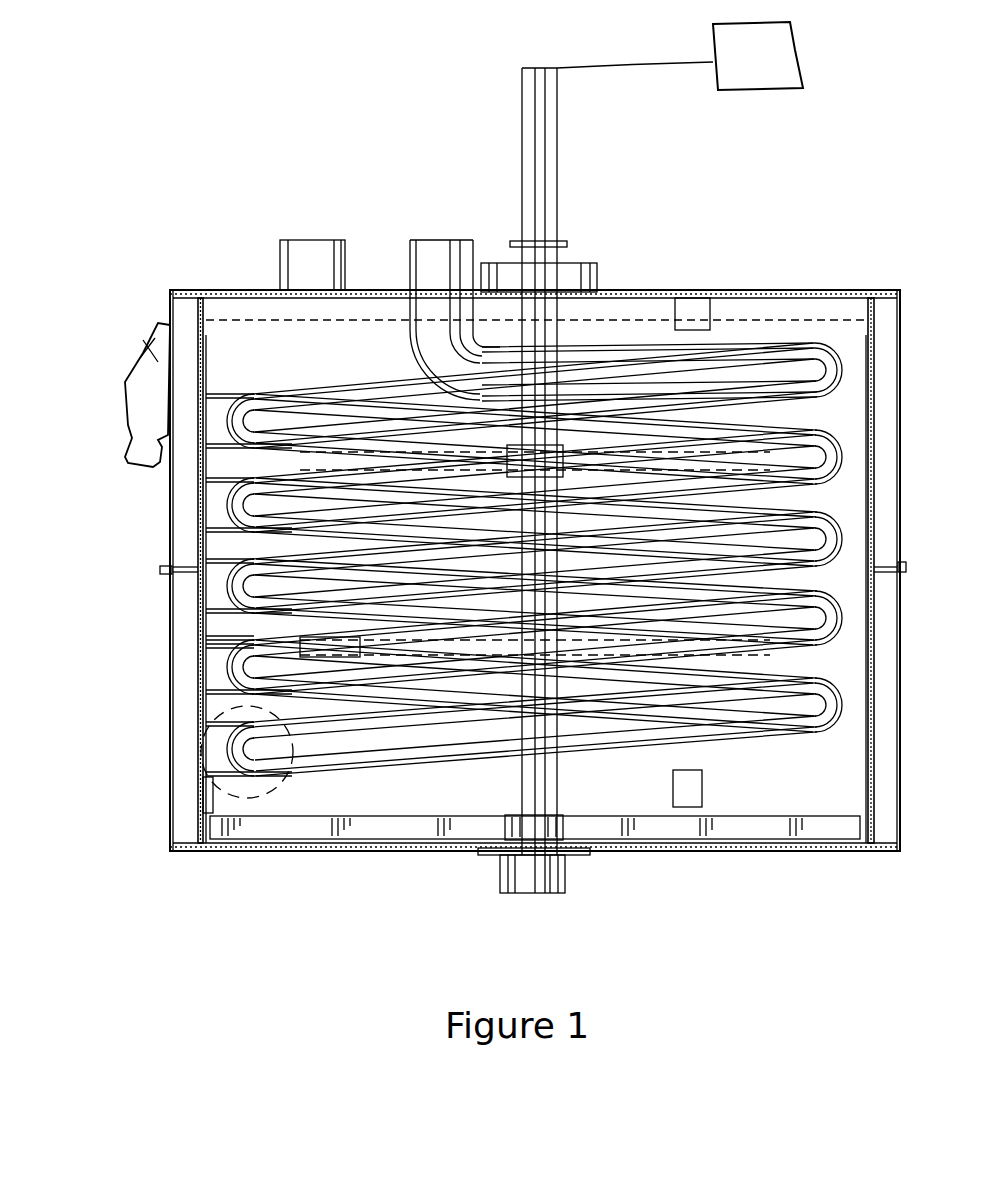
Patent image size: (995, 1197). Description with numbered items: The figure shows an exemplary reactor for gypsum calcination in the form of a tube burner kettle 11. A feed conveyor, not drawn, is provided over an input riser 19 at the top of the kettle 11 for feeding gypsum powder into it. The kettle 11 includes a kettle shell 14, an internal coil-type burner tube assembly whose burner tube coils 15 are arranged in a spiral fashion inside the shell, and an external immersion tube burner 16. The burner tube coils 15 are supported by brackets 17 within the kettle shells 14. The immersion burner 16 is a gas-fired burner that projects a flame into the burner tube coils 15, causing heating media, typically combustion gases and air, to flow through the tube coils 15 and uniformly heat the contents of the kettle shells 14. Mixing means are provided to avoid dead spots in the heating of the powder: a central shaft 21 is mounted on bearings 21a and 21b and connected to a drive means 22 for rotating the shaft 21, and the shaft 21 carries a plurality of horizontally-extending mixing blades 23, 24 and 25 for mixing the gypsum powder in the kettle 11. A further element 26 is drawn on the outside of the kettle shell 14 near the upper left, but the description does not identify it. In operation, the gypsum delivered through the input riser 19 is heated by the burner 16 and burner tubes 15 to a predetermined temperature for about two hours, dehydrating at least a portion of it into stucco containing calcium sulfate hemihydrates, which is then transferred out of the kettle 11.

The kettle 11 is at (728, 289).
The kettle shell 14 is at (874, 333).
The burner tube coils 15 is at (815, 453).
The immersion tube burner 16 is at (210, 733).
The brackets 17 is at (217, 640).
The input riser 19 is at (298, 243).
The central shaft 21 is at (548, 126).
The bearing 21a is at (566, 283).
The bearing 21b is at (522, 880).
The drive means 22 is at (806, 52).
The mixing blade 23 is at (224, 480).
The mixing blade 24 is at (200, 623).
The mixing blade 25 is at (320, 840).
The bracket 26 is at (148, 330).